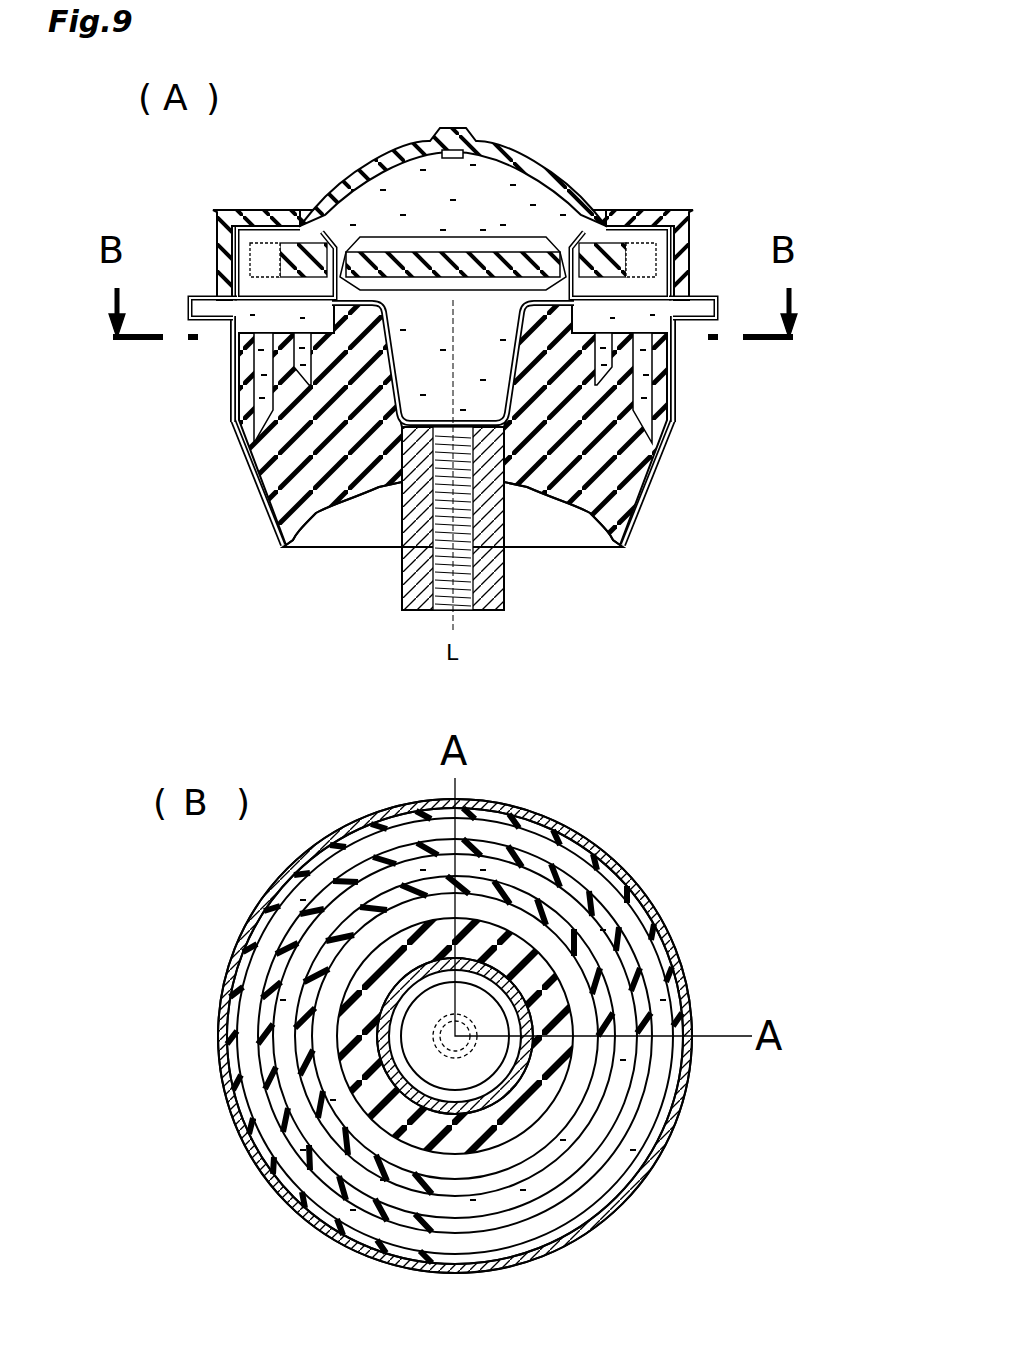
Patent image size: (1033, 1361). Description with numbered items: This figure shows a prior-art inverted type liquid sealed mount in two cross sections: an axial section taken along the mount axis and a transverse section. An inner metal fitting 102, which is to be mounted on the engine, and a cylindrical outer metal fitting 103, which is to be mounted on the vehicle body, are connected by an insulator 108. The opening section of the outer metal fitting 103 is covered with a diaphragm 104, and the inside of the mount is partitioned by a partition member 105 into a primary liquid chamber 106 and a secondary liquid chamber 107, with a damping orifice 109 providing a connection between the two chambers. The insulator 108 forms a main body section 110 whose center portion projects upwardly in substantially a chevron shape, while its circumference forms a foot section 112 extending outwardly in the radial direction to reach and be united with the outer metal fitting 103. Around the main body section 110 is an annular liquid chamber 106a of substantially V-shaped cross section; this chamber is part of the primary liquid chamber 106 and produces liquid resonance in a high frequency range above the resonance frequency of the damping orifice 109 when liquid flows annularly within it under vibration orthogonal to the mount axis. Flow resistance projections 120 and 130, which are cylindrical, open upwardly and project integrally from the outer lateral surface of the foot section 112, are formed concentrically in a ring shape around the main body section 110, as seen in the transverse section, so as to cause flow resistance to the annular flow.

The inner metal fitting 102 is at (495, 580).
The outer metal fitting 103 is at (223, 1083).
The diaphragm 104 is at (372, 168).
The partition member 105 is at (413, 246).
The primary liquid chamber 106 is at (611, 305).
The annular liquid chamber 106a is at (655, 391).
The secondary liquid chamber 107 is at (497, 197).
The insulator 108 is at (315, 513).
The damping orifice 109 is at (626, 258).
The main body section 110 is at (360, 400).
The foot section 112 is at (280, 467).
The flow resistance projection 120 is at (262, 393).
The flow resistance projection 130 is at (300, 357).